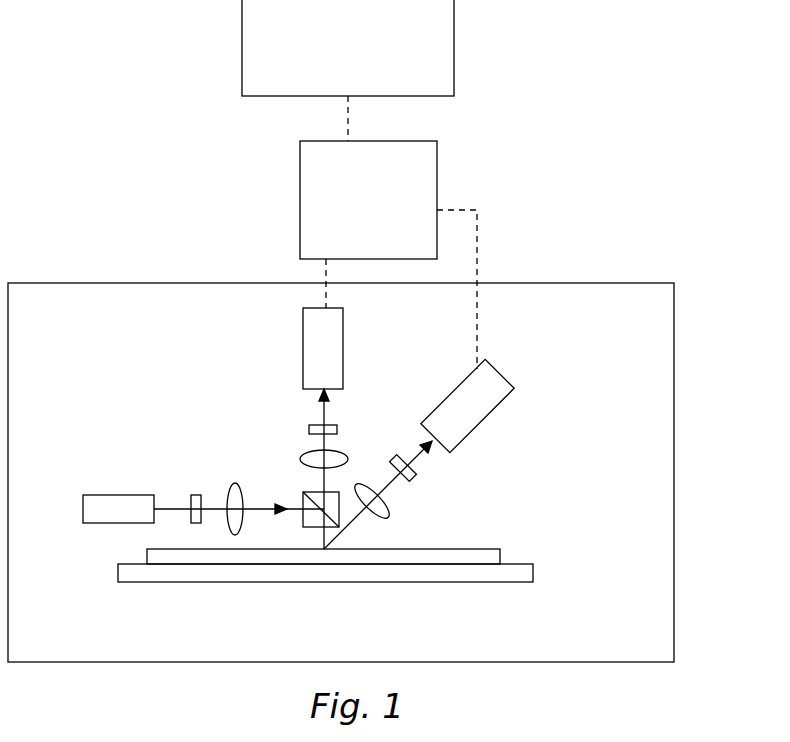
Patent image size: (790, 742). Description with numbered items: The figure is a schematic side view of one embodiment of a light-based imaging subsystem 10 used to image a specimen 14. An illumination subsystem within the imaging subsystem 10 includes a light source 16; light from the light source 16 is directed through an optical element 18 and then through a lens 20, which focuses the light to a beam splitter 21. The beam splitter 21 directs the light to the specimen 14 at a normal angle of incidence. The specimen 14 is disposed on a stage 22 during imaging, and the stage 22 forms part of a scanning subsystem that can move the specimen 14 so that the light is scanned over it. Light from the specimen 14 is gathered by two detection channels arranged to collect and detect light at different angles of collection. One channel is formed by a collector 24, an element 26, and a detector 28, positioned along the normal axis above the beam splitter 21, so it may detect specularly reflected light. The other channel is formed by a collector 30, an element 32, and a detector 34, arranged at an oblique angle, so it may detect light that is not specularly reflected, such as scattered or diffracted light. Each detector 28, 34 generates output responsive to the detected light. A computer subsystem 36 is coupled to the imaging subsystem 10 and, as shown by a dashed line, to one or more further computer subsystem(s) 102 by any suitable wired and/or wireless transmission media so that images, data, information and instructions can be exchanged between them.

The imaging subsystem 10 is at (674, 302).
The specimen 14 is at (147, 552).
The light source 16 is at (92, 495).
The optical element 18 is at (194, 495).
The lens 20 is at (233, 484).
The beam splitter 21 is at (322, 492).
The stage 22 is at (118, 572).
The collector 24 is at (303, 456).
The element 26 is at (309, 427).
The detector 28 is at (303, 350).
The collector 30 is at (389, 512).
The element 32 is at (416, 475).
The detector 34 is at (500, 405).
The computer subsystem 36 is at (355, 240).
The computer subsystem(s) 102 is at (330, 85).